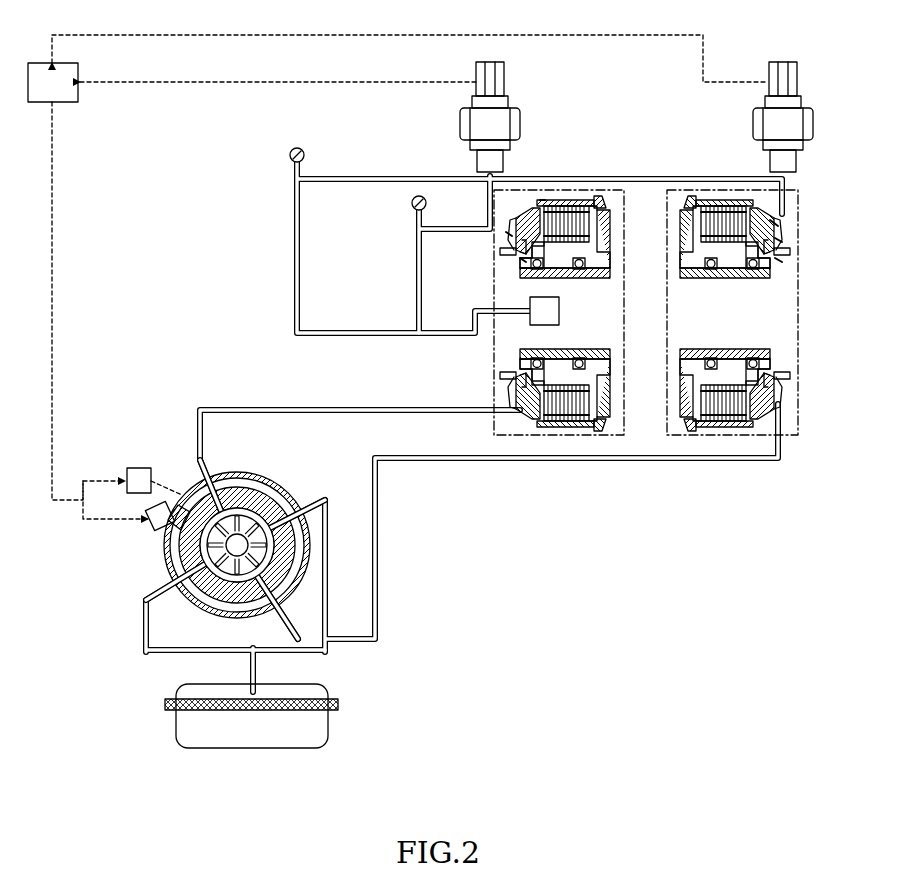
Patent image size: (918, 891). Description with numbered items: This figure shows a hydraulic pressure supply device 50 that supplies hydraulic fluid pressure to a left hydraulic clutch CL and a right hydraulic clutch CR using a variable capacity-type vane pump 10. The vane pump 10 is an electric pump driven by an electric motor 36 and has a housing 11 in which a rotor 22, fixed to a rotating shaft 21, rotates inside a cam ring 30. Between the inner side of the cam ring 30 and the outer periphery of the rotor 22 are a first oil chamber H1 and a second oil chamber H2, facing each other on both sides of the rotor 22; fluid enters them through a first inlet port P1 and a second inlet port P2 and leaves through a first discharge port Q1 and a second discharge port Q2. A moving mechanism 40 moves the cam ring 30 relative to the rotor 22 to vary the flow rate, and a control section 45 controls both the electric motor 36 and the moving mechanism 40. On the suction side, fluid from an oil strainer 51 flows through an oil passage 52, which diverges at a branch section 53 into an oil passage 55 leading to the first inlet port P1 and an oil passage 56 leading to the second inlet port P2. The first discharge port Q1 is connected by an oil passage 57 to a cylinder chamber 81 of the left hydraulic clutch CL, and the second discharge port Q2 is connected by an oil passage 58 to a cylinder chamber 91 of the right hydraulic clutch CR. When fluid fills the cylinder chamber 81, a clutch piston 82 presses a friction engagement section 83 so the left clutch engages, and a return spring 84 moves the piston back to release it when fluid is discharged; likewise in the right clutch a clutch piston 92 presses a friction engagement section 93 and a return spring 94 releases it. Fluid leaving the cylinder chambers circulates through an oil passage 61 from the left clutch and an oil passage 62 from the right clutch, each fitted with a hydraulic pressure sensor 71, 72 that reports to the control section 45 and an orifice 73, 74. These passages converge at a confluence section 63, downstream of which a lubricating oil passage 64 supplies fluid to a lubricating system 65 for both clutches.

The variable capacity-type vane pump 10 is at (263, 477).
The housing 11 is at (233, 475).
The rotating shaft 21 is at (263, 572).
The rotor 22 is at (262, 528).
The cam ring 30 is at (273, 512).
The electric motor 36 is at (140, 468).
The moving mechanism 40 is at (152, 532).
The control section 45 is at (82, 101).
The hydraulic pressure supply device 50 is at (533, 512).
The oil strainer 51 is at (176, 722).
The oil passage 52 is at (258, 670).
The branch section 53 is at (250, 647).
The oil passage 55 is at (143, 632).
The oil passage 56 is at (329, 596).
The oil passage 57 is at (215, 405).
The oil passage 58 is at (379, 503).
The oil passage 61 is at (415, 252).
The oil passage 62 is at (293, 206).
The confluence section 63 is at (421, 337).
The lubricating oil passage 64 is at (472, 337).
The lubricating system 65 is at (560, 310).
The hydraulic pressure sensor 71 is at (513, 88).
The hydraulic pressure sensor 72 is at (806, 88).
The orifice 73 is at (415, 298).
The orifice 74 is at (293, 300).
The cylinder chamber 81 is at (512, 200).
The clutch piston 82 is at (506, 236).
The friction engagement section 83 is at (565, 200).
The return spring 84 is at (522, 259).
The cylinder chamber 91 is at (780, 226).
The clutch piston 92 is at (780, 240).
The friction engagement section 93 is at (718, 200).
The return spring 94 is at (780, 262).
The left hydraulic clutch CL is at (529, 288).
The right hydraulic clutch CR is at (761, 288).
The first oil chamber H1 is at (195, 565).
The second oil chamber H2 is at (270, 547).
The first inlet port P1 is at (198, 592).
The second inlet port P2 is at (290, 507).
The first discharge port Q1 is at (193, 490).
The second discharge port Q2 is at (282, 586).